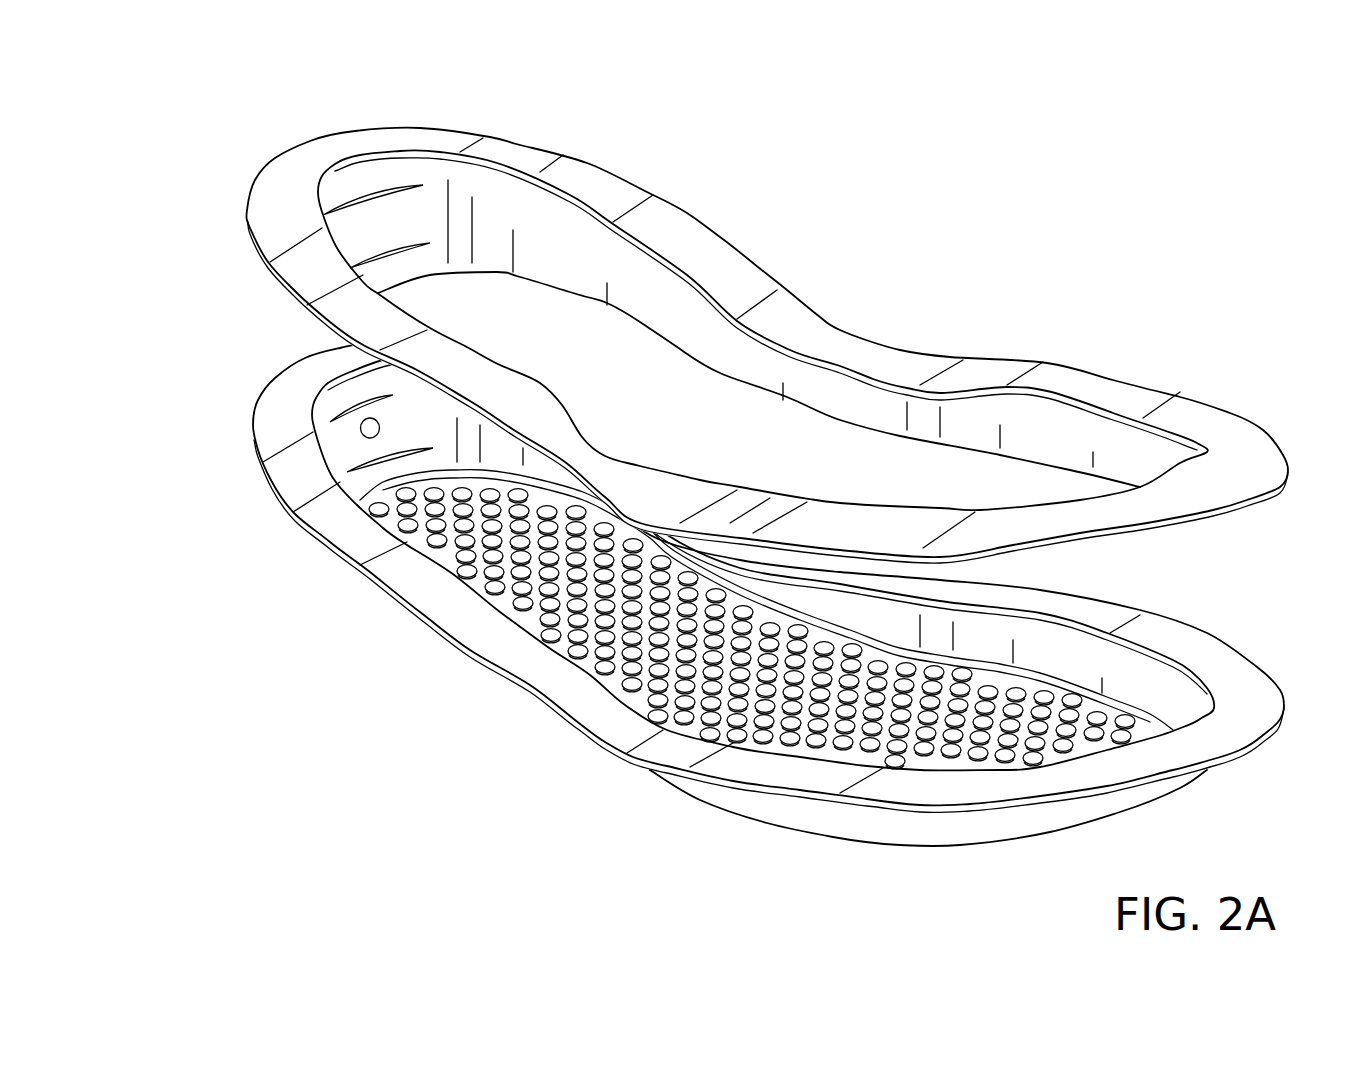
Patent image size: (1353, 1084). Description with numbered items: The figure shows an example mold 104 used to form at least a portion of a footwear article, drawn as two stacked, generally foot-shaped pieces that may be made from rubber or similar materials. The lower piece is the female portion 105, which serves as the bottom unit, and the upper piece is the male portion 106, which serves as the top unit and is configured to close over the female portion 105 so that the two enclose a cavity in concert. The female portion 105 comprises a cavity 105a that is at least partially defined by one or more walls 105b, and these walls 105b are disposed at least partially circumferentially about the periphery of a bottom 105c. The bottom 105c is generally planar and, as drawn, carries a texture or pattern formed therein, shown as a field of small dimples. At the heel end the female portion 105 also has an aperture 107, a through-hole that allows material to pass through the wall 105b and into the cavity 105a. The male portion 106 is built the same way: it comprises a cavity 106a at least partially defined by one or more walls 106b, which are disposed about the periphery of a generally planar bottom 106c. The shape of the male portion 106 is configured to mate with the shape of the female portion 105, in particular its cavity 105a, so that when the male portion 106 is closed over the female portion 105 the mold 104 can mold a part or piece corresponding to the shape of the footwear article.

The mold 104 is at (189, 126).
The female portion 105 is at (530, 683).
The cavity 105a is at (492, 531).
The walls 105b is at (1168, 697).
The bottom 105c is at (830, 770).
The male portion 106 is at (753, 283).
The cavity 106a is at (490, 228).
The walls 106b is at (557, 262).
The bottom 106c is at (693, 420).
The aperture 107 is at (378, 436).